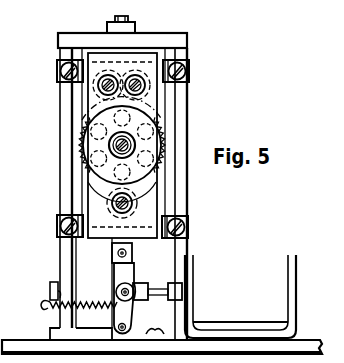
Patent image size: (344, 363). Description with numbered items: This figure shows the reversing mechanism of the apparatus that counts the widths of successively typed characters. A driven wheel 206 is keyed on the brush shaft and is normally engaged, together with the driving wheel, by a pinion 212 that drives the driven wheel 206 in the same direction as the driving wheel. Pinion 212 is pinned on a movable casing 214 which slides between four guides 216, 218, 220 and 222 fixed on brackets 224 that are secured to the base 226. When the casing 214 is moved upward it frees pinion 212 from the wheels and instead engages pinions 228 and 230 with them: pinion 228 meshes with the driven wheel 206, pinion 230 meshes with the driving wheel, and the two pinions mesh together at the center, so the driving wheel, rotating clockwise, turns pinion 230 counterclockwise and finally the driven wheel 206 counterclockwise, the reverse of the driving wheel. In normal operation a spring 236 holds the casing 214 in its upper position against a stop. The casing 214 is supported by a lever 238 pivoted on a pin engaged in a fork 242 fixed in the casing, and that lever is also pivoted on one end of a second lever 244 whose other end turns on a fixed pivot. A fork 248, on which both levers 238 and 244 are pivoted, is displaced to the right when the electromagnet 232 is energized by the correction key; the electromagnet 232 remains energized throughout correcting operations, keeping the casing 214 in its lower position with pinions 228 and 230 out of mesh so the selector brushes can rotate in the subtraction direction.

The driven wheel 206 is at (82, 167).
The pinion 212 is at (108, 202).
The movable casing 214 is at (172, 192).
The guide 216 is at (57, 77).
The guide 218 is at (189, 64).
The guide 220 is at (57, 224).
The guide 222 is at (188, 224).
The bracket 224 is at (63, 143).
The base 226 is at (35, 341).
The pinion 228 is at (88, 97).
The pinion 230 is at (160, 99).
The electromagnet 232 is at (247, 305).
The spring 236 is at (104, 286).
The lever 238 is at (115, 272).
The fork 242 is at (112, 251).
The lever 244 is at (146, 330).
The fork 248 is at (134, 280).